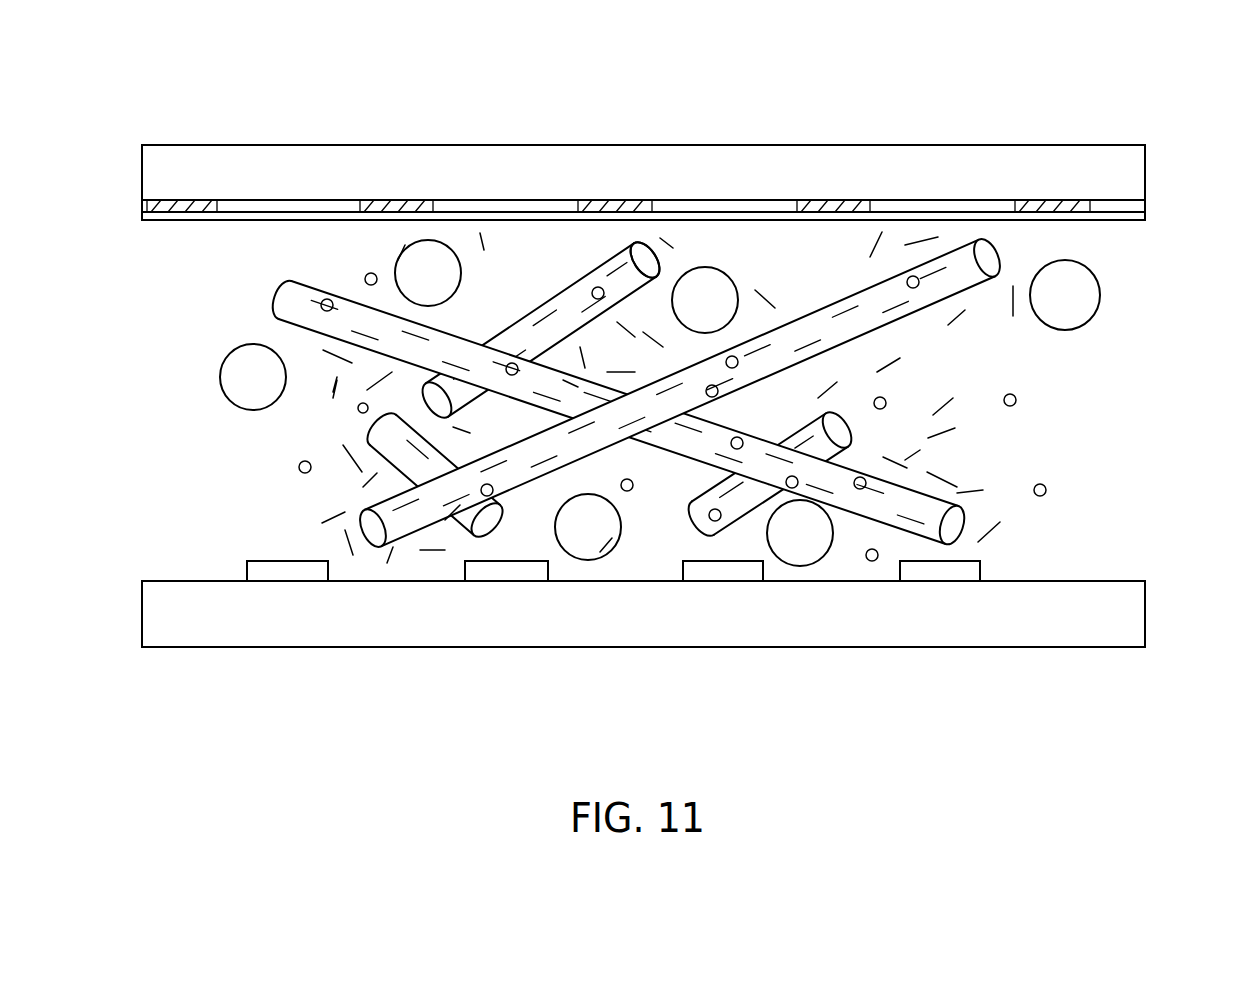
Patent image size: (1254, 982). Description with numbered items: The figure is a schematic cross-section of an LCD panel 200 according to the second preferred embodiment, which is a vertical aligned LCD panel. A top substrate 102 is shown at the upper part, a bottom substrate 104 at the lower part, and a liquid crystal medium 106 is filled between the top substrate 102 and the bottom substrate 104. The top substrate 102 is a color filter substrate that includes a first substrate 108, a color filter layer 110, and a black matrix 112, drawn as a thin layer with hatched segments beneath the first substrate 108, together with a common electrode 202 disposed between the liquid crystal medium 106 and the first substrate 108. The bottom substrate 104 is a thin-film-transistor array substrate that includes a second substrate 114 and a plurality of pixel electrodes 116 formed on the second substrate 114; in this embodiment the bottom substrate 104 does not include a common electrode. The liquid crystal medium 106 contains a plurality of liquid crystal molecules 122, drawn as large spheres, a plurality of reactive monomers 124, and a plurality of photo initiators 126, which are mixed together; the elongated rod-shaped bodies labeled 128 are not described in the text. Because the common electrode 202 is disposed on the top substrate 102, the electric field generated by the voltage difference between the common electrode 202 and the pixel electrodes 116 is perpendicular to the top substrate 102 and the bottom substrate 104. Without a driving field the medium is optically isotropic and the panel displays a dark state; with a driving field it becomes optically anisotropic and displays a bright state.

The LCD panel 200 is at (1065, 86).
The top substrate 102 is at (669, 211).
The bottom substrate 104 is at (694, 630).
The liquid crystal medium 106 is at (734, 331).
The first substrate 108 is at (950, 182).
The color filter layer 110 is at (240, 207).
The black matrix 112 is at (145, 210).
The common electrode 202 is at (157, 218).
The second substrate 114 is at (1068, 632).
The pixel electrodes 116 is at (283, 570).
The liquid crystal molecules 122 is at (718, 290).
The reactive monomers 124 is at (622, 258).
The photo initiators 126 is at (595, 292).
The rod-shaped particles 128 is at (328, 284).